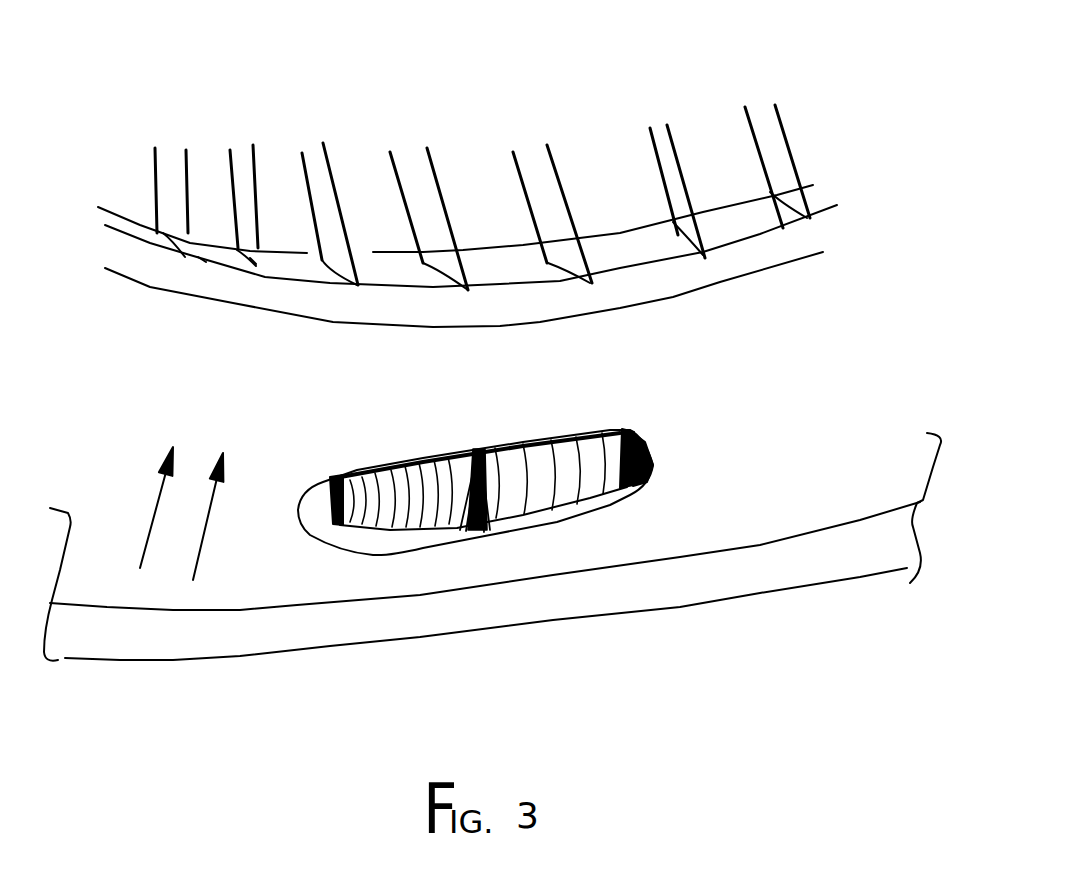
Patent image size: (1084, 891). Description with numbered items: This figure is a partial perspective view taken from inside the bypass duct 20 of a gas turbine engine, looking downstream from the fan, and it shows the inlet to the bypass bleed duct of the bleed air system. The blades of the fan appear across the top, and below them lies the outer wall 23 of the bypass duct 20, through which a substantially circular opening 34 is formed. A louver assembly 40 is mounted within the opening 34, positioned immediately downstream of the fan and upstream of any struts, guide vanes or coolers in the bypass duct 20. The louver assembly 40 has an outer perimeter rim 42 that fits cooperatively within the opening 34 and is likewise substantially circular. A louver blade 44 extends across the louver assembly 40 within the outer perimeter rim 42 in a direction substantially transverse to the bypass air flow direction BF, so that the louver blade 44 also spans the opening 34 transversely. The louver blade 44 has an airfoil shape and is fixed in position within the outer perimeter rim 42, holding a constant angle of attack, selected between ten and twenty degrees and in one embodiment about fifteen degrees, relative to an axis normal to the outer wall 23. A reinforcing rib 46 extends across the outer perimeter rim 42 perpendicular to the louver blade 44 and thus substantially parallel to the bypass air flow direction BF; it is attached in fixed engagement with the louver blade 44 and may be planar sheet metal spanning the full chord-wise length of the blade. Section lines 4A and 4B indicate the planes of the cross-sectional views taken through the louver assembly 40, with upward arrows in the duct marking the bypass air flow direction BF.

The bypass duct 20 is at (823, 305).
The outer wall 23 is at (853, 383).
The opening 34 is at (385, 548).
The louver assembly 40 is at (604, 520).
The outer perimeter rim 42 is at (530, 528).
The louver blade 44 is at (570, 477).
The reinforcing rib 46 is at (467, 483).
The section line 4A is at (267, 468).
The section line 4B is at (463, 596).
The bypass air flow direction BF is at (148, 515).